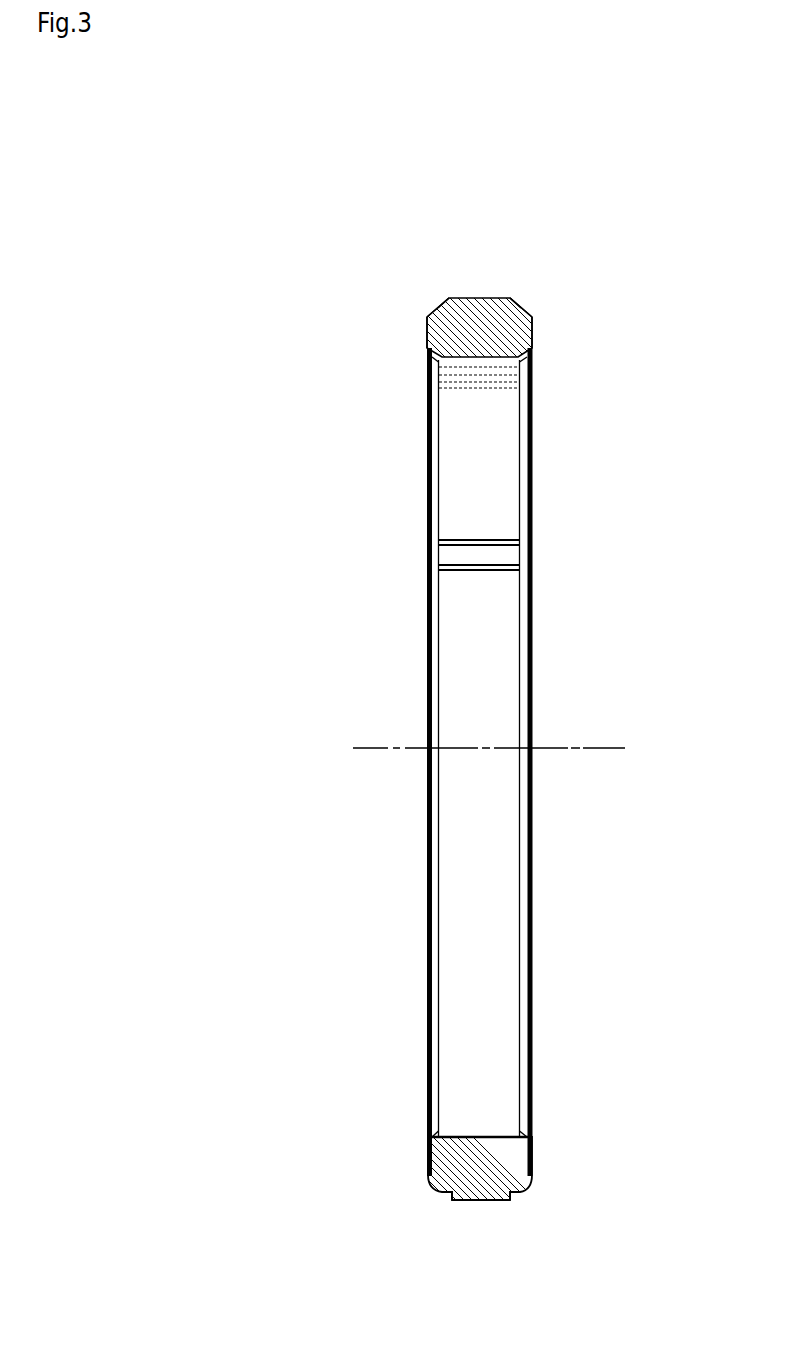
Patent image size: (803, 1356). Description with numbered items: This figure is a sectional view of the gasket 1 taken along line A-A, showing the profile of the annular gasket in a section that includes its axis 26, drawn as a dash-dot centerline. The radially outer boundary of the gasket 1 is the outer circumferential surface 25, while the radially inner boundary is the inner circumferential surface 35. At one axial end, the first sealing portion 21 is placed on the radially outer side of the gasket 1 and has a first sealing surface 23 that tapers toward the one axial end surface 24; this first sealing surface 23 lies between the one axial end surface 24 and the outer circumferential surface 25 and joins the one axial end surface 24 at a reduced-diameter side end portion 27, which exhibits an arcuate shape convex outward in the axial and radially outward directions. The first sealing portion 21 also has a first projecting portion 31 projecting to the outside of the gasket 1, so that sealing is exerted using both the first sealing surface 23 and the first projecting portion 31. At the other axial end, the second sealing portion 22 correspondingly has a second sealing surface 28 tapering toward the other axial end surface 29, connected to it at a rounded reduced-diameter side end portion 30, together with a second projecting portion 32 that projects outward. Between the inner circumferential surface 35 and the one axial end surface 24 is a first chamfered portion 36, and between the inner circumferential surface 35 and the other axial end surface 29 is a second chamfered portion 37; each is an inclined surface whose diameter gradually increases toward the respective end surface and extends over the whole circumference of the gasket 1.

The gasket 1 is at (463, 220).
The first sealing portion 21 is at (430, 1196).
The second sealing portion 22 is at (528, 1196).
The first sealing surface 23 is at (443, 303).
The one axial end surface 24 is at (425, 333).
The outer circumferential surface 25 is at (475, 1203).
The axis 26 is at (592, 748).
The reduced-diameter side end portion 27 is at (428, 313).
The second sealing surface 28 is at (515, 303).
The other axial end surface 29 is at (537, 340).
The reduced-diameter side end portion 30 is at (535, 318).
The first projecting portion 31 is at (448, 300).
The second projecting portion 32 is at (509, 300).
The inner circumferential surface 35 is at (479, 1136).
The first chamfered portion 36 is at (425, 1137).
The second chamfered portion 37 is at (535, 1137).